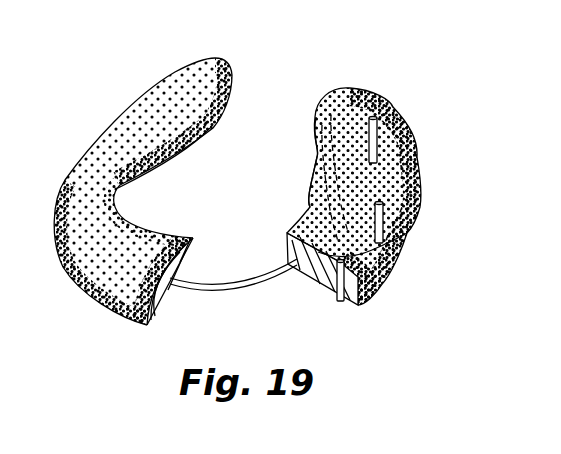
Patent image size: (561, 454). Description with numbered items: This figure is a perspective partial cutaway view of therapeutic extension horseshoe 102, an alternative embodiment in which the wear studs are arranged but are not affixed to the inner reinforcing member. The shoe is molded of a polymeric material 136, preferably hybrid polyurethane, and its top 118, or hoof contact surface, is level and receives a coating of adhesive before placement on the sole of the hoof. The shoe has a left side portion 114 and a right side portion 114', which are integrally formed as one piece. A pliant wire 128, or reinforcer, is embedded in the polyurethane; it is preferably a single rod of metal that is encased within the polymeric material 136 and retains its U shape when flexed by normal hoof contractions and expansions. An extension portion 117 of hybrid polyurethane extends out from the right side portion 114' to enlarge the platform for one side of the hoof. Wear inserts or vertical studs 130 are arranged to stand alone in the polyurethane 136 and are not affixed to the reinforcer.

The therapeutic extension horseshoe 102 is at (93, 72).
The top 118 is at (148, 86).
The left side portion 114 is at (167, 158).
The right side portion 114' is at (289, 160).
The polymeric material 136 is at (167, 302).
The pliant wire 128 is at (231, 280).
The extension portion 117 is at (393, 143).
The vertical studs 130 is at (375, 113).